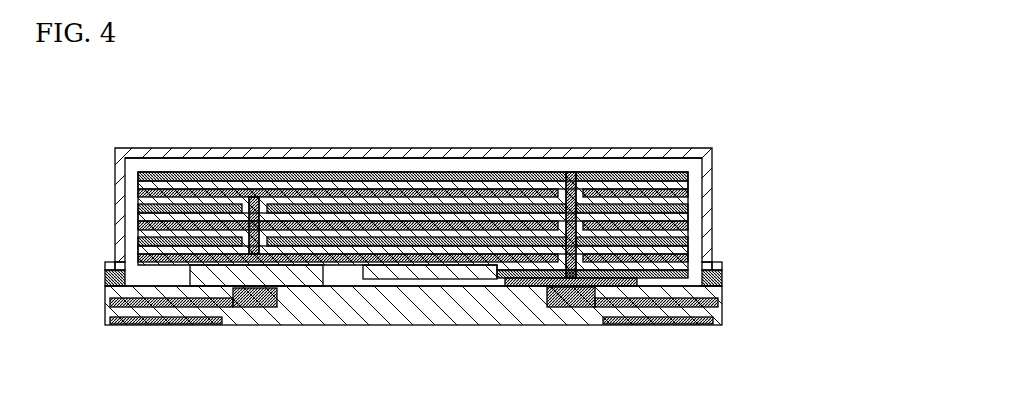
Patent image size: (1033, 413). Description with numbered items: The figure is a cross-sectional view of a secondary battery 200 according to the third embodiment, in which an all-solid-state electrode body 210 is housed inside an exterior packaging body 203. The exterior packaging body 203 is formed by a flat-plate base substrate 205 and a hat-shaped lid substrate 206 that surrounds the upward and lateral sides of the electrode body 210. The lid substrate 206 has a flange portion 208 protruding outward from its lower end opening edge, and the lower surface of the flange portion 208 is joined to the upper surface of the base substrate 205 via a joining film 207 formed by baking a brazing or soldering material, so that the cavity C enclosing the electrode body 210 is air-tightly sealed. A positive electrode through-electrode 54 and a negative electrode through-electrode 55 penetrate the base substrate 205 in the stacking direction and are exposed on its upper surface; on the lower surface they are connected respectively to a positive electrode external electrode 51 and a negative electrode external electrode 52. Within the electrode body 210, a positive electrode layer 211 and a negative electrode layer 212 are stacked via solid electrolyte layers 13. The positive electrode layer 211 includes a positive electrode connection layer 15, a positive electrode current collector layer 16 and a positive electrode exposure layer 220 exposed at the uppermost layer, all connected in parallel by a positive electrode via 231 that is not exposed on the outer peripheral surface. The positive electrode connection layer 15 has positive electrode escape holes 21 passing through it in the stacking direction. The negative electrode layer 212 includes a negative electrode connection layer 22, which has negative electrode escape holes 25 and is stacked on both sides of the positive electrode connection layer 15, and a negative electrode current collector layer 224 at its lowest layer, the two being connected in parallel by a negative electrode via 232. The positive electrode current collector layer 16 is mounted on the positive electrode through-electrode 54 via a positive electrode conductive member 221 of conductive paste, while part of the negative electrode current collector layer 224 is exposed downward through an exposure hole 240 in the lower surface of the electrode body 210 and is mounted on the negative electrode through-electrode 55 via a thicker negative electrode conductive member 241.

The secondary battery 200 is at (727, 114).
The exterior packaging body 203 is at (720, 175).
The lid substrate 206 is at (635, 152).
The cavity C is at (666, 167).
The positive electrode current collector layer 16 is at (708, 268).
The flange portion 208 is at (723, 277).
The joining film 207 is at (723, 294).
The base substrate 205 is at (723, 314).
The negative electrode through-electrode 55 is at (259, 308).
The negative electrode external electrode 52 is at (163, 325).
The positive electrode through-electrode 54 is at (560, 304).
The positive electrode external electrode 51 is at (657, 325).
The negative electrode conductive member 241 is at (305, 281).
The exposure hole 240 is at (365, 276).
The positive electrode conductive member 221 is at (598, 285).
The positive electrode exposure layer 220 is at (501, 270).
The electrode body 210 is at (368, 204).
The positive electrode layer 211 is at (508, 168).
The negative electrode layer 212 is at (450, 181).
The positive electrode connection layer 15 is at (418, 232).
The positive electrode escape hole 21 is at (266, 212).
The solid electrolyte layer 13 is at (522, 188).
The negative electrode connection layer 22 is at (138, 192).
The negative electrode current collector layer 224 is at (138, 258).
The negative electrode via 232 is at (250, 197).
The positive electrode via 231 is at (571, 205).
The negative electrode escape hole 25 is at (565, 235).